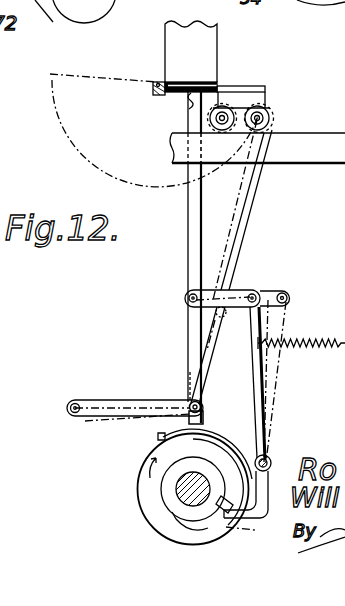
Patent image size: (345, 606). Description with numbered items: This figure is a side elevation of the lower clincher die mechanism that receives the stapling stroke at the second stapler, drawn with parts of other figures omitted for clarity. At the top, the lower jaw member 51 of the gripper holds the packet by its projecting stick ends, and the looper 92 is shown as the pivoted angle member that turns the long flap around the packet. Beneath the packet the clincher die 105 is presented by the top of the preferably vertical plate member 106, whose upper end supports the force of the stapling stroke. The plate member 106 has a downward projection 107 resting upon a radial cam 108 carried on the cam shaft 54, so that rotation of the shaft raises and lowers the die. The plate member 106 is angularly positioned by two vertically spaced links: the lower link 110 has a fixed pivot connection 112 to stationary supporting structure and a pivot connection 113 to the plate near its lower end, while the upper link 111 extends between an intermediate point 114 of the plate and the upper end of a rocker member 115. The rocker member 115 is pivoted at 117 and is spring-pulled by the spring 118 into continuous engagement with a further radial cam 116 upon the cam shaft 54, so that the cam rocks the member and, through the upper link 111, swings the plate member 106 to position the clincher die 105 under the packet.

The lower jaw member 51 is at (266, 90).
The cam shaft 54 is at (180, 493).
The looper 92 is at (154, 90).
The clincher die 105 is at (190, 95).
The plate member 106 is at (186, 245).
The downward projections 107 is at (203, 419).
The radial cam 108 is at (150, 526).
The links 110 is at (158, 398).
The links 111 is at (240, 290).
The fixed pivot connections 112 is at (80, 404).
The pivot connections 113 is at (187, 400).
The intermediate point 114 is at (186, 299).
The rocker member 115 is at (270, 388).
The radial cam 116 is at (177, 533).
The pivot 117 is at (270, 459).
The spring 118 is at (321, 336).